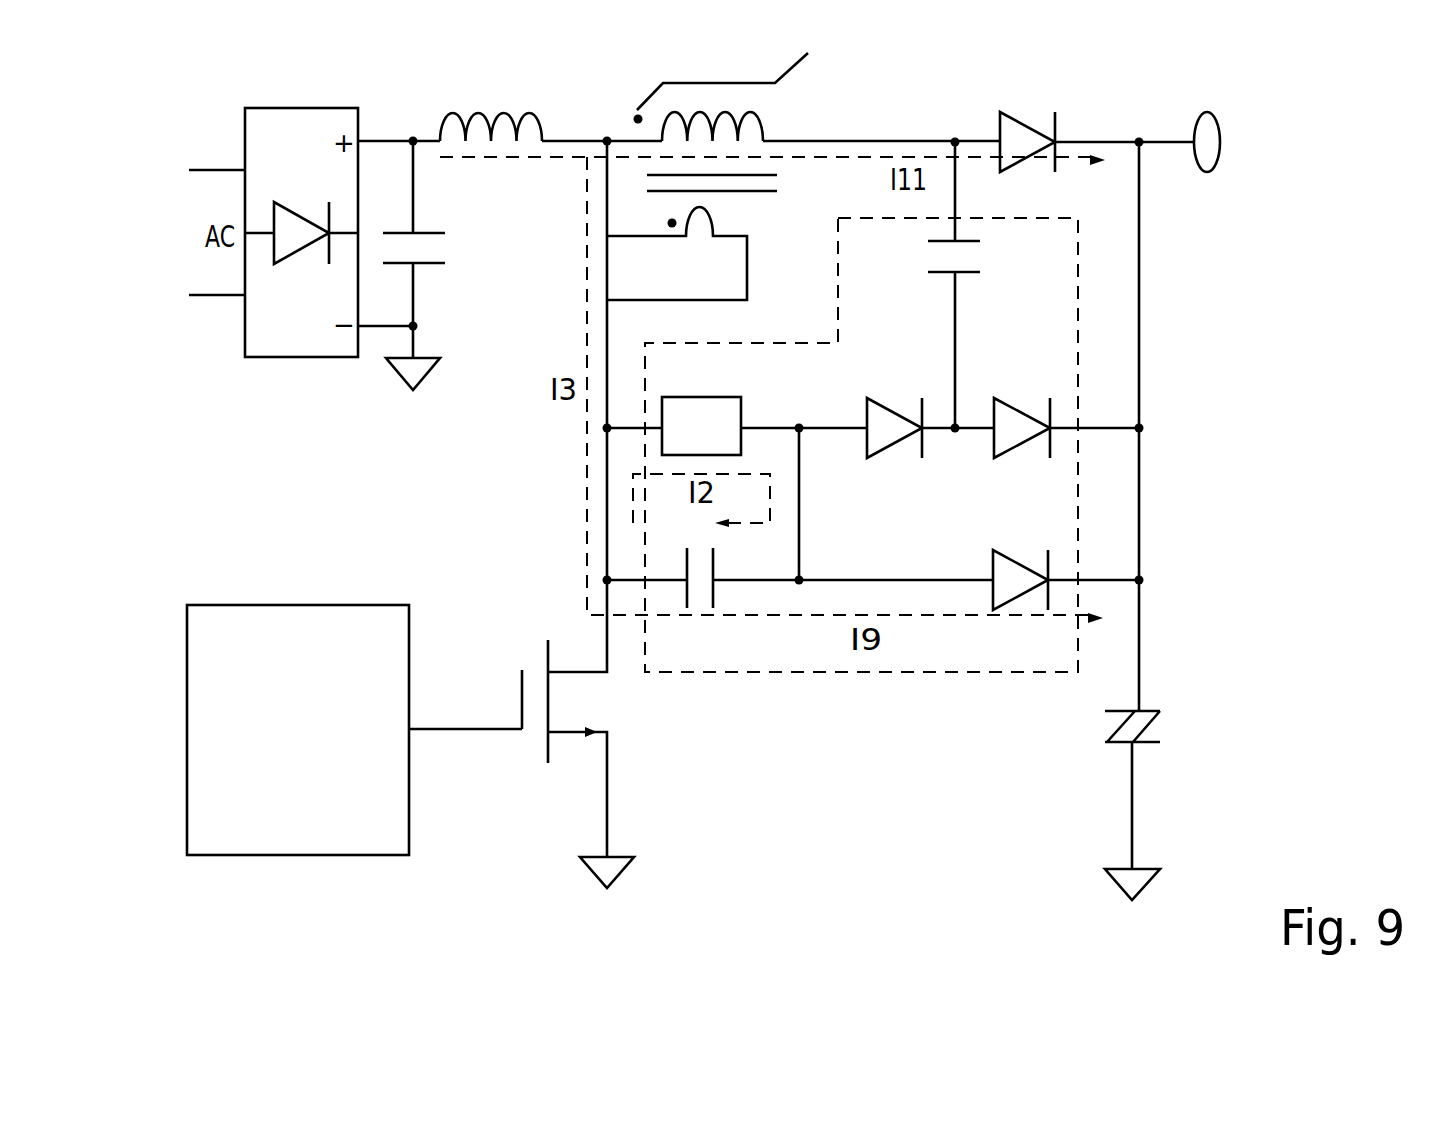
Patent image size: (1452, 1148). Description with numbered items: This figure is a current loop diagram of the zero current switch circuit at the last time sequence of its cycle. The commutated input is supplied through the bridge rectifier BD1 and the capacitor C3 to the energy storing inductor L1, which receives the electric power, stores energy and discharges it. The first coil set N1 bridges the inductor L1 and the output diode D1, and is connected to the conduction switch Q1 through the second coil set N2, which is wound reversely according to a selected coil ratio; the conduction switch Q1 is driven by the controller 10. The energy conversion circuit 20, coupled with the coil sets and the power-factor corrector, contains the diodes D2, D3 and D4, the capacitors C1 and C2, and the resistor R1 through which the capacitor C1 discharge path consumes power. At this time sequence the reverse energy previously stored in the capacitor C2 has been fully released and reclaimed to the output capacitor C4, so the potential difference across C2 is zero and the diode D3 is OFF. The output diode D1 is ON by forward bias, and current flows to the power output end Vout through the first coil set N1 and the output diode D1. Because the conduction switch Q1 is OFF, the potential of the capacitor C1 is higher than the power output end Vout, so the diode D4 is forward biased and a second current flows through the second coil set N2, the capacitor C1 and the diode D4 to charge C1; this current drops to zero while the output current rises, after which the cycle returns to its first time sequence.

The controller 10 is at (358, 843).
The energy conversion circuit 20 is at (1067, 327).
The bridge rectifier BD1 is at (301, 216).
The input capacitor C3 is at (434, 265).
The energy storing inductor L1 is at (491, 108).
The first coil set N1 is at (721, 122).
The second coil set N2 is at (696, 250).
The output diode D1 is at (1027, 123).
The power output end Vout is at (1210, 168).
The capacitor C2 is at (994, 285).
The resistor R1 is at (701, 402).
The diode D2 is at (894, 448).
The diode D3 is at (1022, 448).
The capacitor C1 is at (700, 602).
The diode D4 is at (1020, 603).
The output capacitor C4 is at (1149, 788).
The conduction switch Q1 is at (578, 745).